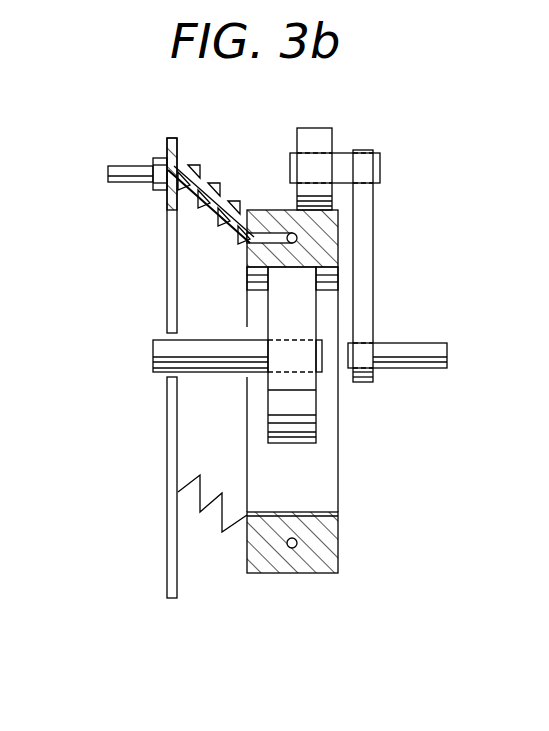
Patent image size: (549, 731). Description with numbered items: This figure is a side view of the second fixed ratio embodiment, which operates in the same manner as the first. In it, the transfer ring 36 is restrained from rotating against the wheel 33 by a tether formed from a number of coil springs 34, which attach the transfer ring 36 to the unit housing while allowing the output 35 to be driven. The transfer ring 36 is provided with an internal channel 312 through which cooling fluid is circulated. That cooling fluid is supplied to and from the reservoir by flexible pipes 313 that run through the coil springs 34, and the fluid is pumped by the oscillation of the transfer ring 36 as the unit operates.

The flexible pipes 313 is at (160, 158).
The wheel 33 is at (320, 138).
The coil springs 34 is at (185, 190).
The output 35 is at (283, 315).
The transfer ring 36 is at (293, 570).
The internal channel 312 is at (296, 547).